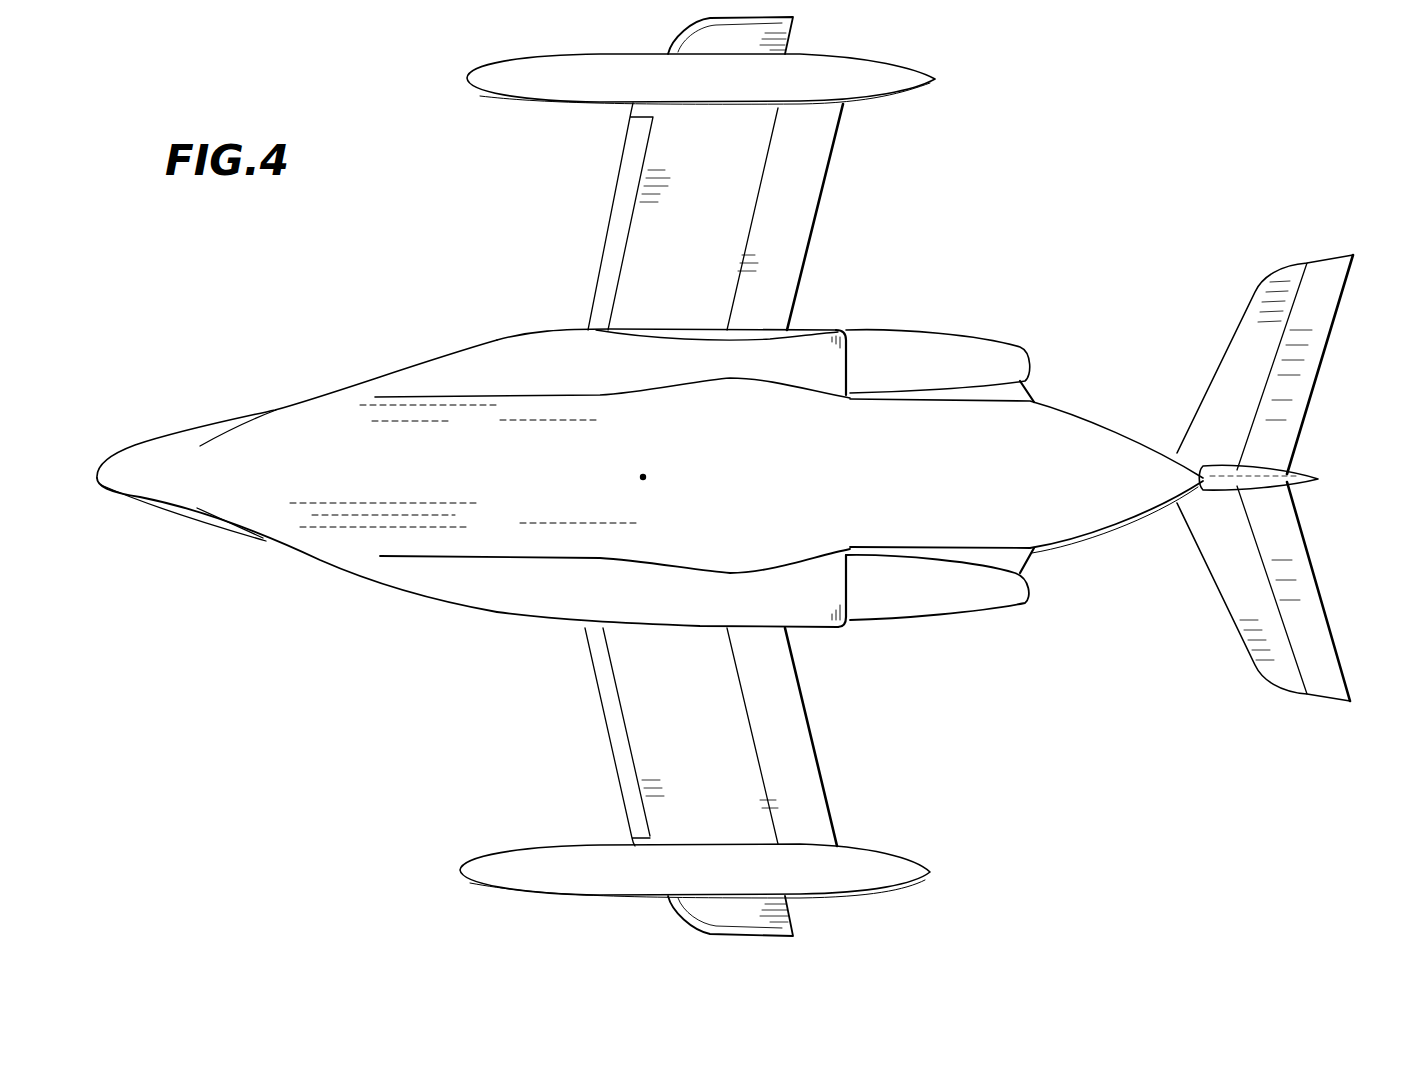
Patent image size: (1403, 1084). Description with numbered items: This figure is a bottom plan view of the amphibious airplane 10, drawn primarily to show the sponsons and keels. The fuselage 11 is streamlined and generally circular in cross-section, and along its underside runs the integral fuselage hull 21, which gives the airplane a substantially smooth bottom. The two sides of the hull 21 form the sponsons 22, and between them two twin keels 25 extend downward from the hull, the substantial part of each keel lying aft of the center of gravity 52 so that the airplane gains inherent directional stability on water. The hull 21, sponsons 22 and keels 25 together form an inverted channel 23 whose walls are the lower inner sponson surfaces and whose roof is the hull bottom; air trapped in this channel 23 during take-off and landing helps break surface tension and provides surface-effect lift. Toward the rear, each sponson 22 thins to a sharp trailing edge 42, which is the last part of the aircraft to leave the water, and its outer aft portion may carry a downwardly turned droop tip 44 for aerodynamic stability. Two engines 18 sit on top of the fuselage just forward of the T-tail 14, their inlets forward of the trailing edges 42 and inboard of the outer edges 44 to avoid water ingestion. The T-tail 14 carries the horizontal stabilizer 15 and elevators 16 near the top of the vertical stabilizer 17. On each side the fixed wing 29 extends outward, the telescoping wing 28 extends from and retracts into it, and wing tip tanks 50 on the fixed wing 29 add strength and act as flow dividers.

The amphibious airplane 10 is at (261, 353).
The fuselage 11 is at (412, 602).
The T-tail 14 is at (1312, 463).
The horizontal stabilizer 15 is at (1253, 336).
The elevators 16 is at (1302, 341).
The vertical stabilizer 17 is at (1308, 483).
The engines 18 is at (963, 350).
The fuselage hull 21 is at (546, 488).
The sponsons 22 is at (556, 333).
The inverted channel 23 is at (790, 488).
The twin keels 25 is at (713, 386).
The telescoping wing 28 is at (783, 28).
The fixed wing 29 is at (655, 195).
The sharp trailing edge 42 is at (849, 360).
The droop tip 44 is at (774, 332).
The wing tip tanks 50 is at (527, 85).
The center of gravity 52 is at (643, 477).